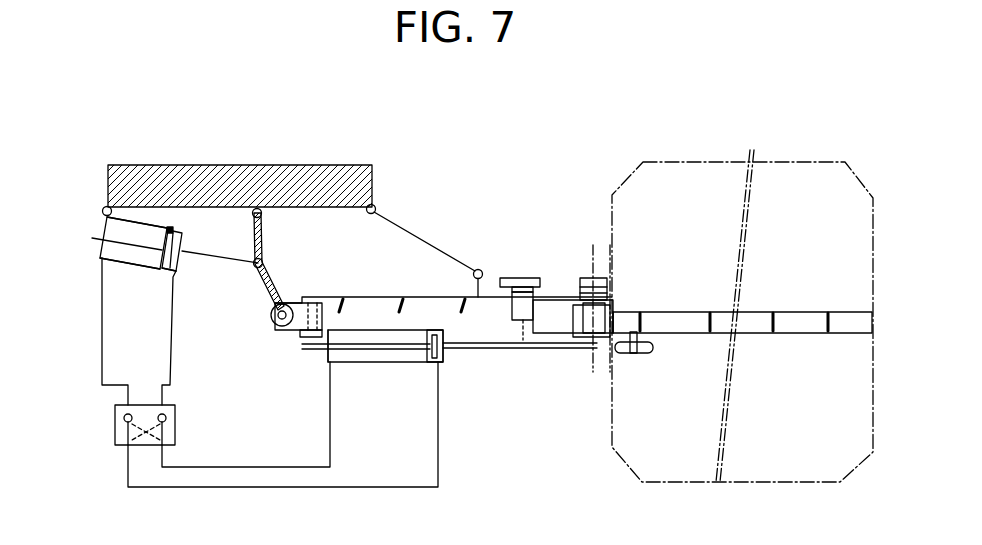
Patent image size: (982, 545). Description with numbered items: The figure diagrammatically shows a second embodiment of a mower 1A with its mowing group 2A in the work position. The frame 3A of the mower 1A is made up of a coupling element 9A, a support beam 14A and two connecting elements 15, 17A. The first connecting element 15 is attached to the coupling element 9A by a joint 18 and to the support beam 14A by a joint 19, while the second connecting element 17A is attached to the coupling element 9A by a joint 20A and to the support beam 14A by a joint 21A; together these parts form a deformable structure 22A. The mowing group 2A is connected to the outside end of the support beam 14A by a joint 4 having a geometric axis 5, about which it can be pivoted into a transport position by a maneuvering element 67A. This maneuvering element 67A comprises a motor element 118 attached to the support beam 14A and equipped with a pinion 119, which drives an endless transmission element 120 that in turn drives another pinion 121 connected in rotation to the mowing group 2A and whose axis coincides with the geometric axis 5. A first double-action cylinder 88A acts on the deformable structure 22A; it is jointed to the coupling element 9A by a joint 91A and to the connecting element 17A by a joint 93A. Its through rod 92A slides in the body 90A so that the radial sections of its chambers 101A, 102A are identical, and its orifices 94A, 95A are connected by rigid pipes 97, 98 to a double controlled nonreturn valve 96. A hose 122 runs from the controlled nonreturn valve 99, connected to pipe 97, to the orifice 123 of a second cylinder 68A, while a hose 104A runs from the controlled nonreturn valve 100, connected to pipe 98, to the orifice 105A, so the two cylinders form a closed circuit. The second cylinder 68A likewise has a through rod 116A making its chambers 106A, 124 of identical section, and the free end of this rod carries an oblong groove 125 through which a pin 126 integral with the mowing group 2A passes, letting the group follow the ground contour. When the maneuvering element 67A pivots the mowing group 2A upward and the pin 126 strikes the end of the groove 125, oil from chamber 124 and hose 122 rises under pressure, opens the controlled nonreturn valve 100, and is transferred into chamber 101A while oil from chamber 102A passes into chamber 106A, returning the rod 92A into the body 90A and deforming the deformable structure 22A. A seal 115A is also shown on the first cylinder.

The mower 1A is at (482, 193).
The mowing group 2A is at (818, 312).
The frame 3A is at (378, 163).
The joint 4 is at (620, 291).
The geometric axis 5 is at (593, 370).
The coupling element 9A is at (346, 165).
The support beam 14A is at (421, 296).
The first connecting element 15 is at (428, 238).
The second connecting element 17A is at (264, 243).
The joint 18 is at (376, 208).
The joint 19 is at (478, 269).
The joint 20A is at (259, 208).
The joint 21A is at (277, 327).
The deformable structure 22A is at (372, 260).
The maneuvering element 67A is at (547, 268).
The second cylinder 68A is at (388, 362).
The first double-action cylinder 88A is at (163, 228).
The body 90A is at (150, 260).
The joint 91A is at (103, 209).
The rod 92A is at (243, 262).
The joint 93A is at (263, 264).
The orifice 94A is at (170, 274).
The orifice 95A is at (102, 264).
The double controlled nonreturn valve 96 is at (115, 447).
The rigid pipe 97 is at (171, 335).
The rigid pipe 98 is at (102, 335).
The controlled nonreturn valve 99 is at (175, 422).
The controlled nonreturn valve 100 is at (115, 422).
The chamber 101A is at (178, 256).
The chamber 102A is at (140, 233).
The hose 104A is at (217, 488).
The orifice 105A is at (444, 368).
The chamber 106A is at (442, 350).
The seal 115A is at (176, 230).
The rod 116A is at (545, 349).
The motor element 118 is at (517, 312).
The pinion 119 is at (512, 278).
The endless transmission element 120 is at (558, 278).
The pinion 121 is at (600, 283).
The hose 122 is at (330, 437).
The orifice 123 is at (327, 363).
The chamber 124 is at (328, 344).
The oblong groove 125 is at (623, 355).
The pin 126 is at (638, 352).